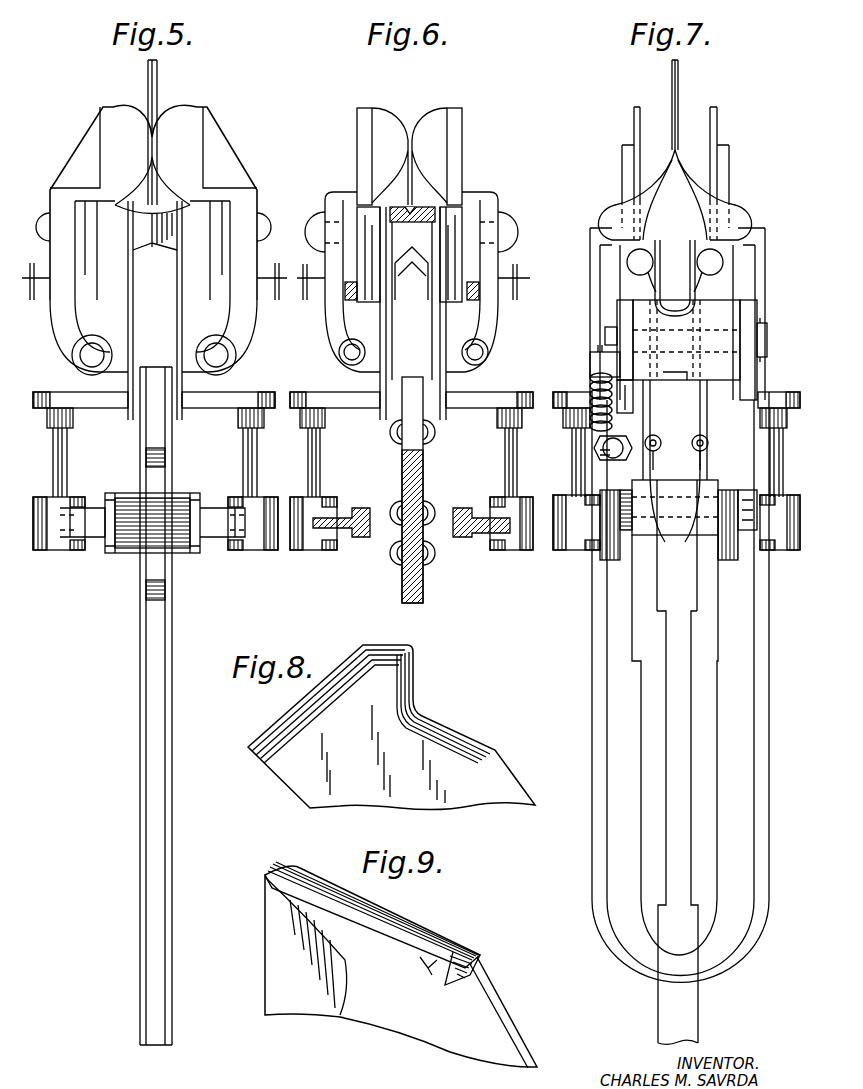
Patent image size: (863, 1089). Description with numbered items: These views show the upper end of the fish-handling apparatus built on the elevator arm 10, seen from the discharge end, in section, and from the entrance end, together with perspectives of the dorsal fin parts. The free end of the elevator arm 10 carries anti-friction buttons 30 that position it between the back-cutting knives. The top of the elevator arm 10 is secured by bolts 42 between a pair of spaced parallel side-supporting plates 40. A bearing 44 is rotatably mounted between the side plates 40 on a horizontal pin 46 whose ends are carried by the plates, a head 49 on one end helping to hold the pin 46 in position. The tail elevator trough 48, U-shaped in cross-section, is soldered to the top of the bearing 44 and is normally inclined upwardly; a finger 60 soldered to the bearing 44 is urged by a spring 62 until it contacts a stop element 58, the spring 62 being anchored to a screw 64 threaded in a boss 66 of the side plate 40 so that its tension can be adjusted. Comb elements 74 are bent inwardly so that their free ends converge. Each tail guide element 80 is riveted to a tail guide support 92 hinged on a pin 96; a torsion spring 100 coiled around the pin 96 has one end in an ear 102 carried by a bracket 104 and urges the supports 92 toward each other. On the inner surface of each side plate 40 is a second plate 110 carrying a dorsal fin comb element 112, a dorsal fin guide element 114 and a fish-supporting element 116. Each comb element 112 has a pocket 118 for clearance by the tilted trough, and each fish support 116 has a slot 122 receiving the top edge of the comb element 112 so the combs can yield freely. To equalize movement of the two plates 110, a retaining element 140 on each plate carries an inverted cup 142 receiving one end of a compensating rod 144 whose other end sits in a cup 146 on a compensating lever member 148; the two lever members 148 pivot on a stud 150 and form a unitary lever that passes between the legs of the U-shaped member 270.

In FIG. 5, the elevator arm 10 is at (142, 597).
In FIG. 6, the elevator arm 10 is at (423, 593).
In FIG. 7, the elevator arm 10 is at (690, 600).
In FIG. 6, the buttons 30 is at (430, 447).
In FIG. 6, the side-supporting plates 40 is at (455, 212).
In FIG. 7, the side-supporting plates 40 is at (615, 263).
In FIG. 7, the bolts 42 is at (629, 530).
In FIG. 7, the bearing 44 is at (625, 310).
In FIG. 7, the horizontal pin 46 is at (765, 339).
In FIG. 7, the tail elevator trough 48 is at (660, 258).
In FIG. 7, the head 49 is at (605, 335).
In FIG. 7, the stop element 58 is at (626, 400).
In FIG. 7, the finger 60 is at (600, 366).
In FIG. 7, the spring 62 is at (592, 390).
In FIG. 7, the screw 64 is at (612, 458).
In FIG. 7, the boss 66 is at (600, 453).
In FIG. 6, the comb element 74 is at (415, 260).
In FIG. 5, the tail guide element 80 is at (172, 118).
In FIG. 6, the tail guide element 80 is at (425, 128).
In FIG. 6, the tail guide support 92 is at (496, 200).
In FIG. 5, the pin 96 is at (217, 358).
In FIG. 6, the pin 96 is at (474, 356).
In FIG. 7, the pin 96 is at (708, 447).
In FIG. 5, the torsion spring 100 is at (252, 358).
In FIG. 6, the torsion spring 100 is at (505, 340).
In FIG. 5, the ear 102 is at (278, 270).
In FIG. 6, the ear 102 is at (516, 272).
In FIG. 6, the bracket 104 is at (507, 260).
In FIG. 5, the second plate 110 is at (182, 317).
In FIG. 9, the second plate 110 is at (522, 1046).
In FIG. 8, the dorsal fin comb element 112 is at (396, 648).
In FIG. 9, the dorsal fin guide element 114 is at (348, 980).
In FIG. 5, the fish-supporting element 116 is at (160, 245).
In FIG. 6, the fish-supporting element 116 is at (413, 212).
In FIG. 9, the fish-supporting element 116 is at (410, 931).
In FIG. 8, the pocket 118 is at (457, 730).
In FIG. 9, the slot 122 is at (432, 970).
In FIG. 5, the retaining element 140 is at (209, 400).
In FIG. 6, the retaining element 140 is at (473, 400).
In FIG. 7, the retaining element 140 is at (568, 395).
In FIG. 5, the inverted cup 142 is at (243, 428).
In FIG. 6, the inverted cup 142 is at (497, 428).
In FIG. 7, the inverted cup 142 is at (765, 412).
In FIG. 5, the compensating rod 144 is at (255, 470).
In FIG. 6, the compensating rod 144 is at (320, 465).
In FIG. 7, the compensating rod 144 is at (775, 455).
In FIG. 5, the cup 146 is at (268, 550).
In FIG. 6, the cup 146 is at (515, 550).
In FIG. 7, the cup 146 is at (790, 548).
In FIG. 5, the compensating lever member 148 is at (217, 540).
In FIG. 6, the compensating lever member 148 is at (461, 508).
In FIG. 5, the stud 150 is at (186, 505).
In FIG. 7, the U-shaped member 270 is at (767, 756).